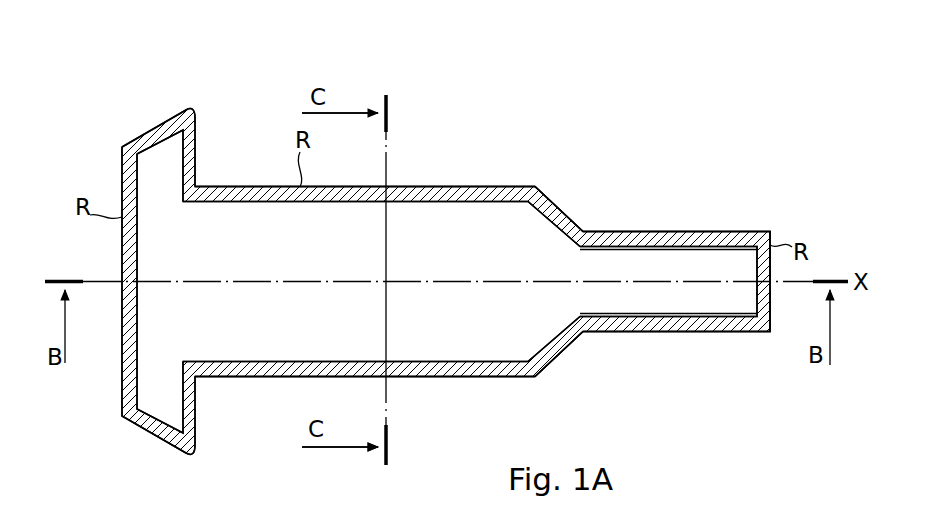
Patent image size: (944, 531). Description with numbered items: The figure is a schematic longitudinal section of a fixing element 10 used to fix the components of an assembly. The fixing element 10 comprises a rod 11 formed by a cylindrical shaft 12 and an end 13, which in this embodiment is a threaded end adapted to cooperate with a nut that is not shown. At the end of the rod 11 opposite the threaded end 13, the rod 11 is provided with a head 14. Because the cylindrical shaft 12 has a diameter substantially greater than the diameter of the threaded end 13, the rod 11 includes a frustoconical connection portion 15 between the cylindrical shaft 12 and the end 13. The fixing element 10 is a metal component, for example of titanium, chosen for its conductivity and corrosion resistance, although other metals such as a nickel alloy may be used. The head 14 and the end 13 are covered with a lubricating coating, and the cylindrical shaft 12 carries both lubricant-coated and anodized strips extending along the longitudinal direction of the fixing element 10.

The fixing element 10 is at (192, 52).
The rod 11 is at (560, 180).
The cylindrical shaft 12 is at (452, 211).
The end 13 is at (662, 255).
The head 14 is at (150, 368).
The frustoconical connection portion 15 is at (547, 328).